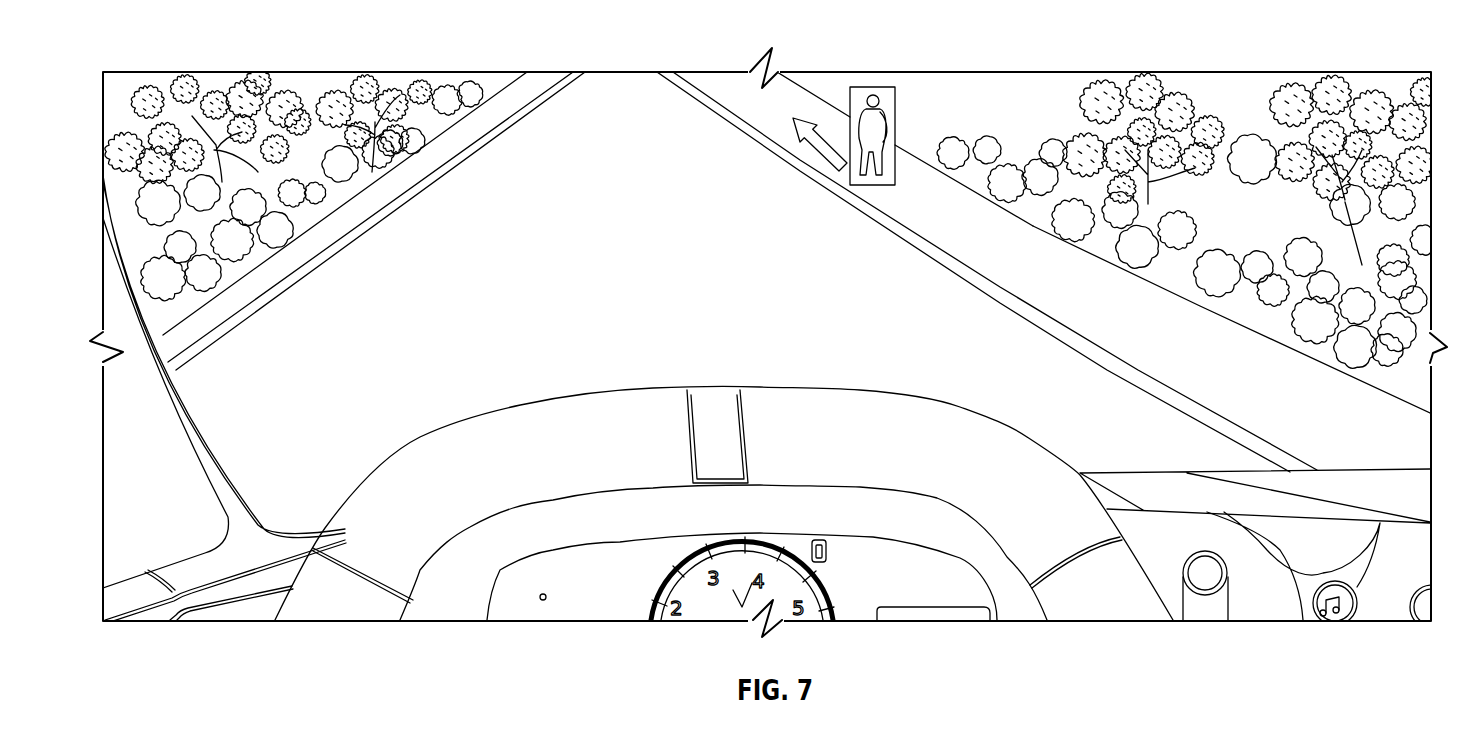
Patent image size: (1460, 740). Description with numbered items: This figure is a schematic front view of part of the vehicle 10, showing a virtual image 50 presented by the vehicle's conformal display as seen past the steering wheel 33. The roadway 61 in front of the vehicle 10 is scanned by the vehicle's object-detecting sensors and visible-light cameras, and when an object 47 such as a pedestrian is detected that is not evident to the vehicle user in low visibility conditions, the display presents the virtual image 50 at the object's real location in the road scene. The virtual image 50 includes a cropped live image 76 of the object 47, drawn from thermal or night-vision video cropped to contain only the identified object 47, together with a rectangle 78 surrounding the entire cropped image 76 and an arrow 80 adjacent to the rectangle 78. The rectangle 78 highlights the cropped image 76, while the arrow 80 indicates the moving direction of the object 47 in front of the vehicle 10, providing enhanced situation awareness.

The vehicle 10 is at (170, 508).
The steering wheel 33 is at (872, 407).
The object 47 is at (893, 117).
The virtual image 50 is at (876, 96).
The roadway 61 is at (543, 203).
The cropped live image 76 is at (870, 97).
The rectangle 78 is at (897, 137).
The arrow 80 is at (840, 165).